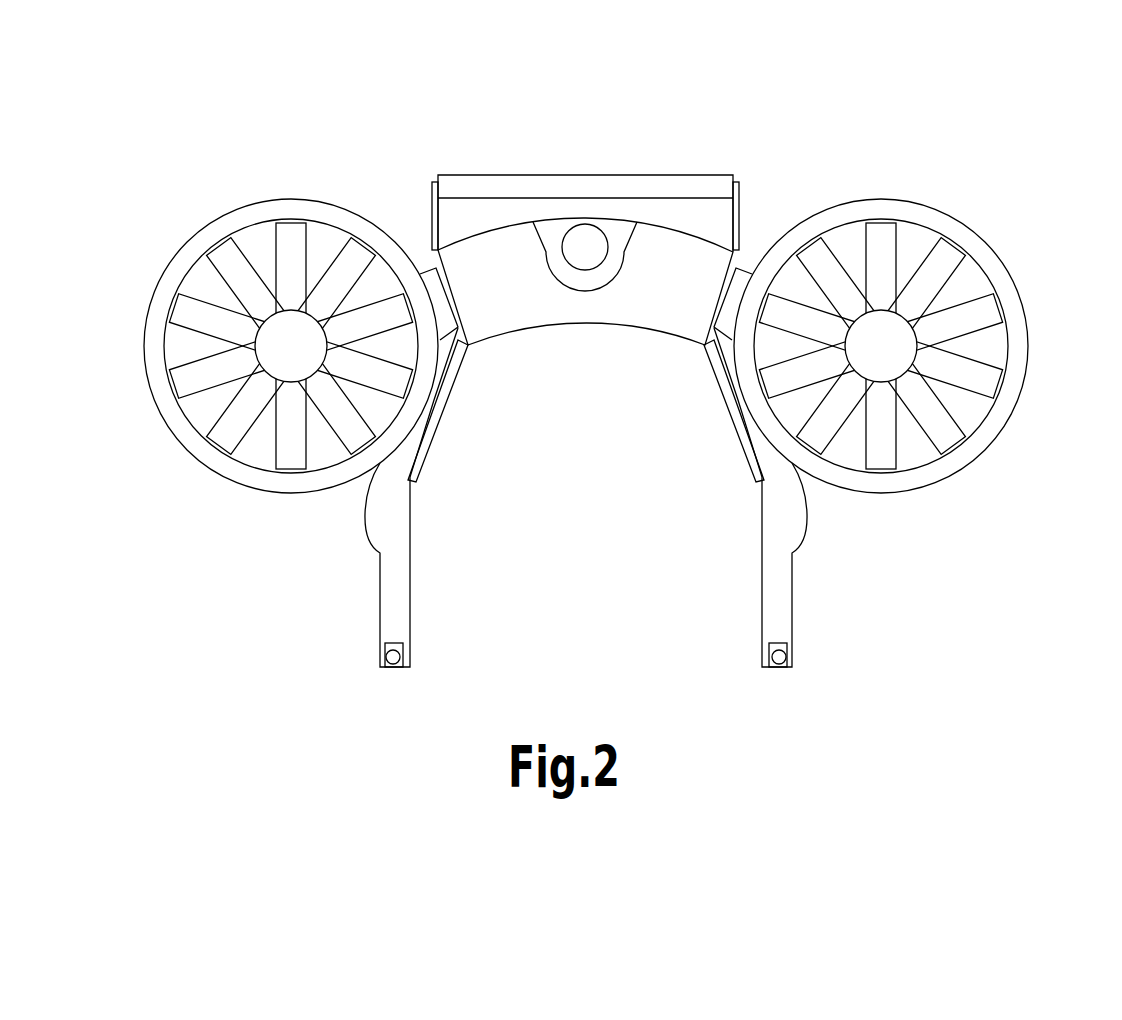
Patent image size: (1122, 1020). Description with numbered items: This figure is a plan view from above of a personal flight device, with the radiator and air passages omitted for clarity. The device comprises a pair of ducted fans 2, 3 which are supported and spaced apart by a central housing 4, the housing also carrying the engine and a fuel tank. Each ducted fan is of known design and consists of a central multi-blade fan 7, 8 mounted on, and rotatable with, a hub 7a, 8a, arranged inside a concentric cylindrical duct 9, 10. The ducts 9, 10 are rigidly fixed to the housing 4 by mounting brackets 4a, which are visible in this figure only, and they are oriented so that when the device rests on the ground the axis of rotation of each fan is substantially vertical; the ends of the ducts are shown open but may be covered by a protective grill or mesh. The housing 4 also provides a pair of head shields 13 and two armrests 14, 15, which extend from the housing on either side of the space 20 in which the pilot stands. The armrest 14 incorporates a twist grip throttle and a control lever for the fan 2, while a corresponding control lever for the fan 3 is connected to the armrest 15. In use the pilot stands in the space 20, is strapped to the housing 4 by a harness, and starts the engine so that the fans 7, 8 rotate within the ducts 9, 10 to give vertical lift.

The ducted fan 2 is at (287, 206).
The ducted fan 3 is at (932, 207).
The central housing 4 is at (558, 326).
The mounting brackets 4a is at (430, 269).
The multi-blade fan 7 is at (172, 311).
The hub 7a is at (272, 333).
The multi-blade fan 8 is at (992, 373).
The hub 8a is at (898, 328).
The cylindrical duct 9 is at (198, 461).
The cylindrical duct 10 is at (970, 452).
The head shields 13 is at (441, 428).
The armrest 14 is at (409, 601).
The armrest 15 is at (763, 601).
The space 20 is at (591, 380).